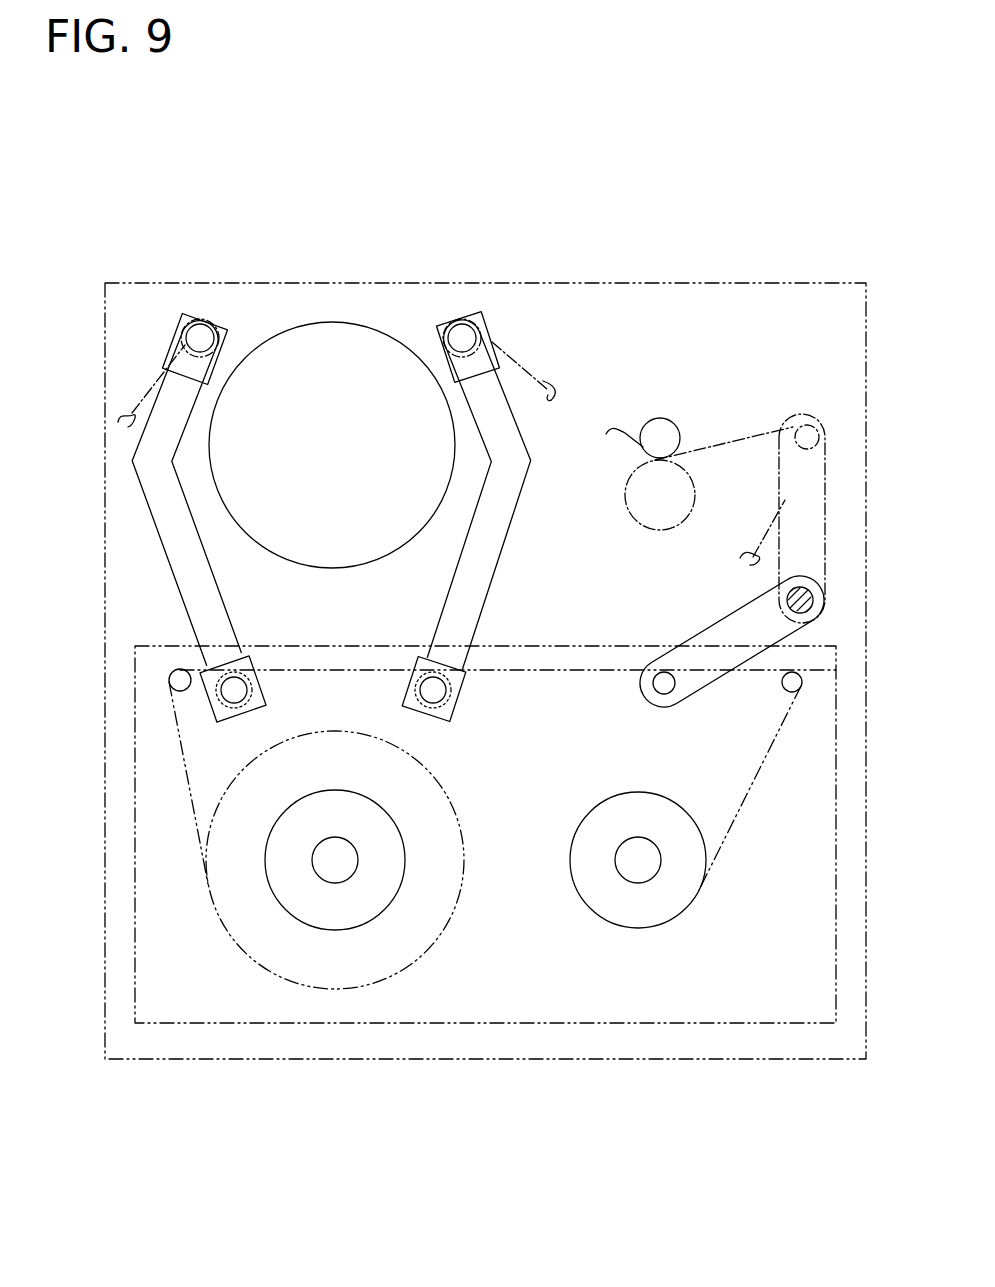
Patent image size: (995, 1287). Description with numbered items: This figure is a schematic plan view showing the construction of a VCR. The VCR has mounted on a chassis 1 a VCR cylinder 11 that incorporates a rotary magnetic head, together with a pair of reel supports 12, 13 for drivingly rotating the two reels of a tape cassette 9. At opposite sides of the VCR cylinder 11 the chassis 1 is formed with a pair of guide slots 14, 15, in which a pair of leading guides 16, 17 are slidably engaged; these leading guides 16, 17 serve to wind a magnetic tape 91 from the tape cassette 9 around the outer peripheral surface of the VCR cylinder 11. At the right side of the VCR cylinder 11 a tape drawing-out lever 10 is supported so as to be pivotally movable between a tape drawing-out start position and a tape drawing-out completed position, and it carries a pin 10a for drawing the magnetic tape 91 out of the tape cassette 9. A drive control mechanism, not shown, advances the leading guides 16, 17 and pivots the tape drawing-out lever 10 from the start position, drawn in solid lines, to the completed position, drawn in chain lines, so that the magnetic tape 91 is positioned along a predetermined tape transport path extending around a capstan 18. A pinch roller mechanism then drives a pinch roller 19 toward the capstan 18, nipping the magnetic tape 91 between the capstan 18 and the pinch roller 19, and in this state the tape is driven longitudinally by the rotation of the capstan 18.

The chassis 1 is at (604, 283).
The tape cassette 9 is at (318, 1025).
The magnetic tape 91 is at (529, 371).
The tape drawing-out lever 10 is at (738, 627).
The pin 10a is at (808, 428).
The VCR cylinder 11 is at (323, 538).
The reel support 12 is at (312, 892).
The reel support 13 is at (596, 868).
The guide slot 14 is at (200, 588).
The guide slot 15 is at (460, 607).
The leading guide 16 is at (200, 322).
The leading guide 17 is at (461, 322).
The capstan 18 is at (648, 424).
The pinch roller 19 is at (645, 492).